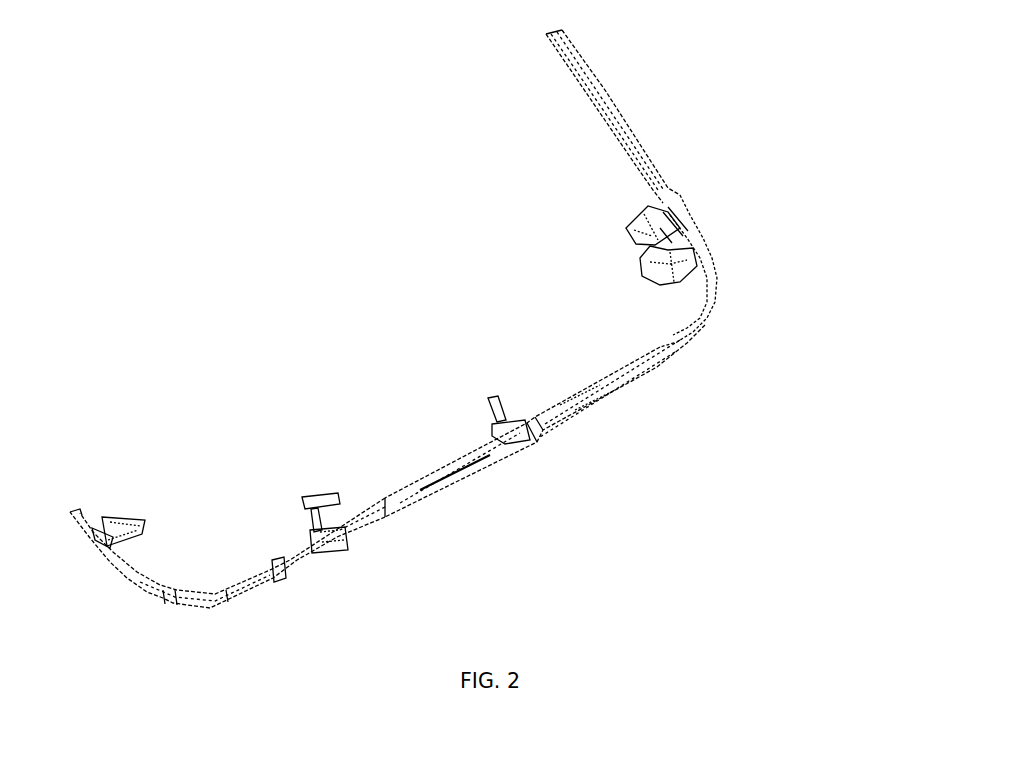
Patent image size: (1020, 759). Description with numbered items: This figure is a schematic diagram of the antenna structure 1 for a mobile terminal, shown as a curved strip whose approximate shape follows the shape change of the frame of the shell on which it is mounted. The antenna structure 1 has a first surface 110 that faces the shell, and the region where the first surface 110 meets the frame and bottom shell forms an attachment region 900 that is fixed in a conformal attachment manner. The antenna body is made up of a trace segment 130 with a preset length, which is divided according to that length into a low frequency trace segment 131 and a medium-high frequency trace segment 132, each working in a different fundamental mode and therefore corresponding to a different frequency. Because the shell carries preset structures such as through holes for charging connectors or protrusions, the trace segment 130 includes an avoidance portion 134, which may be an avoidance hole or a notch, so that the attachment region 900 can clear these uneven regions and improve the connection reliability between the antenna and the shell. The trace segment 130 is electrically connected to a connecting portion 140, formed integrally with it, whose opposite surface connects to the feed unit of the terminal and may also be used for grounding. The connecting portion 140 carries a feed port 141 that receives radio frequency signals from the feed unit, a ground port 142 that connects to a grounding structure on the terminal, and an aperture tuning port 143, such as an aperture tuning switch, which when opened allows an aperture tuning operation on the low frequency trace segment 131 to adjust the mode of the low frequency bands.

The antenna structure 1 is at (843, 86).
The first surface 110 is at (410, 497).
The trace segment 130 is at (770, 392).
The low frequency trace segment 131 is at (660, 350).
The medium-high frequency trace segment 132 is at (358, 522).
The avoidance portion 134 is at (287, 560).
The connecting portion 140 is at (502, 232).
The feed port 141 is at (640, 261).
The aperture tuning port 143 is at (627, 224).
The ground port 142 is at (127, 525).
The attachment region 900 is at (193, 602).